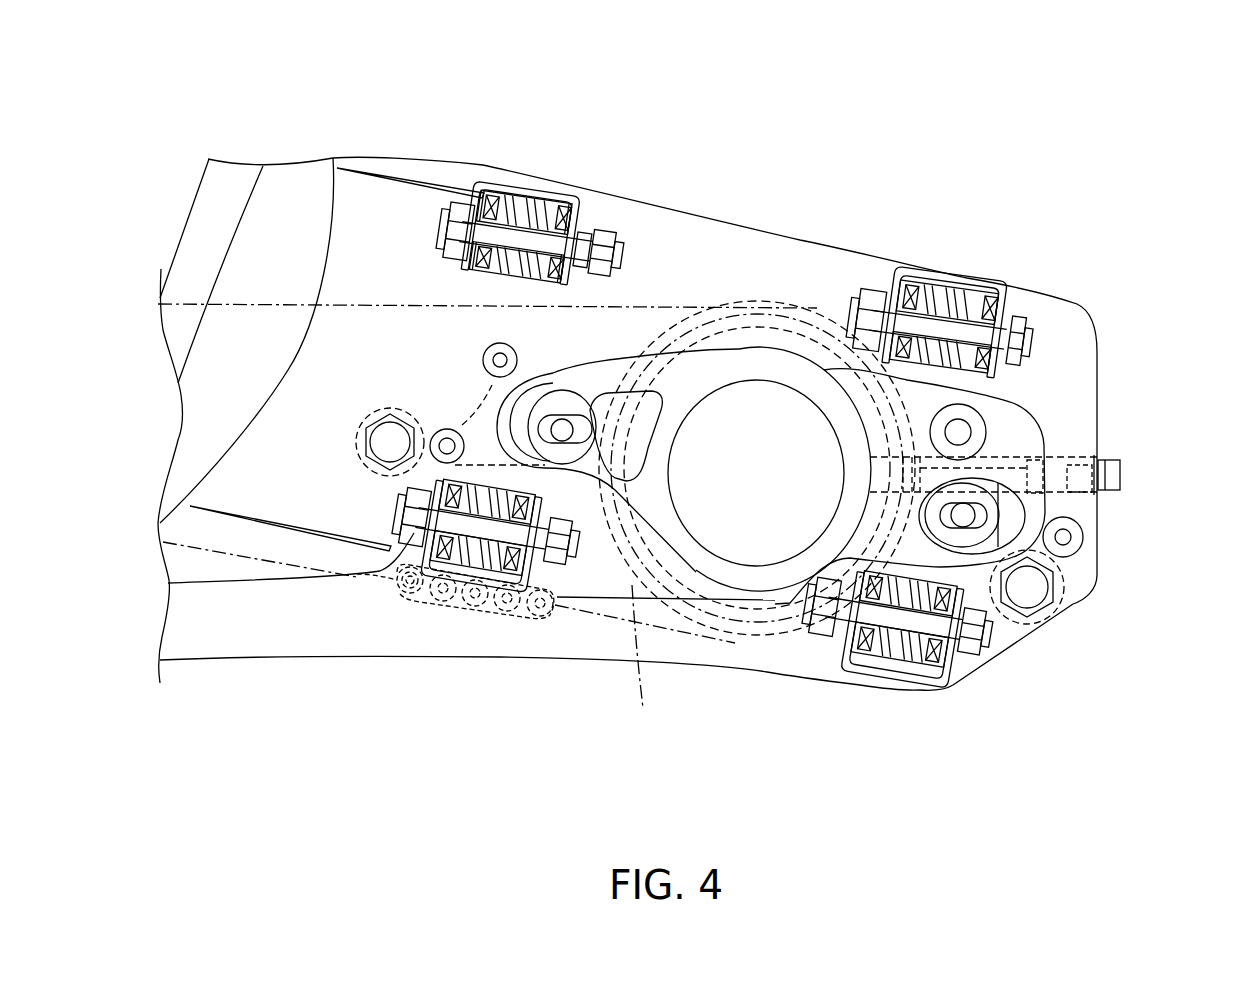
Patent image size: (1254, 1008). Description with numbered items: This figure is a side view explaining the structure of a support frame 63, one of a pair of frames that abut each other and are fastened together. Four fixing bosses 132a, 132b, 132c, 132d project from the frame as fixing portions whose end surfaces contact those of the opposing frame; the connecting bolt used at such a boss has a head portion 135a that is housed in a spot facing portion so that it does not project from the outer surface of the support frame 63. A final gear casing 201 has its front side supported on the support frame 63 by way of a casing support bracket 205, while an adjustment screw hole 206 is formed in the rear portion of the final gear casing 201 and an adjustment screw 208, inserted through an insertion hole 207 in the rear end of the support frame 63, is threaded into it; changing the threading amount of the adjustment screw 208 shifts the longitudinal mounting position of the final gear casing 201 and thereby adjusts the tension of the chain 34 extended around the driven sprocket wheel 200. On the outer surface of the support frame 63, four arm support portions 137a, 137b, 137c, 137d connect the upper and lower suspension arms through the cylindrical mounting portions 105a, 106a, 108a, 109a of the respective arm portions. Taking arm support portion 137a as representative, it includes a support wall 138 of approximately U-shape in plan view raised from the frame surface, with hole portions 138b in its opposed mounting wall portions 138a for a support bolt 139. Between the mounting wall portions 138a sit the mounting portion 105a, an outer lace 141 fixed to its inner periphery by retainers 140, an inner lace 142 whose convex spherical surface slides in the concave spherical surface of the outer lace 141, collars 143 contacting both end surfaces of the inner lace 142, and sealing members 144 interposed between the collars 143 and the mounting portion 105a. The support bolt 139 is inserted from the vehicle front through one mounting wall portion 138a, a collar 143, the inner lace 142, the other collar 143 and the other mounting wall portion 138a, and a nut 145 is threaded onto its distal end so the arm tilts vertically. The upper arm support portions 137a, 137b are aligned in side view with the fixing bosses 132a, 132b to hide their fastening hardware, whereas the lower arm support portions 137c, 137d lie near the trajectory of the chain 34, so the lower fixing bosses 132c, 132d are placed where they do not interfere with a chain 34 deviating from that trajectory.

The support frame 63 is at (795, 250).
The chain 34 is at (514, 606).
The cylindrical mounting portion of the upper first arm portion 105a is at (555, 185).
The cylindrical mounting portion of the upper second arm portion 106a is at (977, 294).
The cylindrical mounting portion of the lower first arm portion 108a is at (460, 567).
The cylindrical mounting portion of the lower second arm portion 109a is at (900, 668).
The fixing boss 132a is at (531, 215).
The fixing boss 132b is at (957, 274).
The fixing boss 132c is at (380, 468).
The fixing boss 132d is at (1069, 582).
The head portion of the connection bolt 135a is at (370, 466).
The arm support portion 137a is at (539, 204).
The arm support portion 137b is at (959, 279).
The arm support portion 137c is at (491, 608).
The arm support portion 137d is at (879, 653).
The support wall 138 is at (488, 208).
The mounting wall portion 138a is at (463, 268).
The hole portion 138b is at (451, 241).
The support bolt 139 is at (491, 186).
The retainer 140 is at (488, 290).
The outer lace 141 is at (495, 363).
The inner lace 142 is at (523, 215).
The collar 143 is at (485, 188).
The sealing member 144 is at (471, 276).
The nut 145 is at (601, 237).
The driven sprocket wheel 200 is at (642, 664).
The final gear casing 201 is at (828, 373).
The casing support bracket 205 is at (470, 405).
The adjustment screw hole 206 is at (1003, 470).
The insertion hole 207 is at (1082, 478).
The adjustment screw 208 is at (1122, 479).